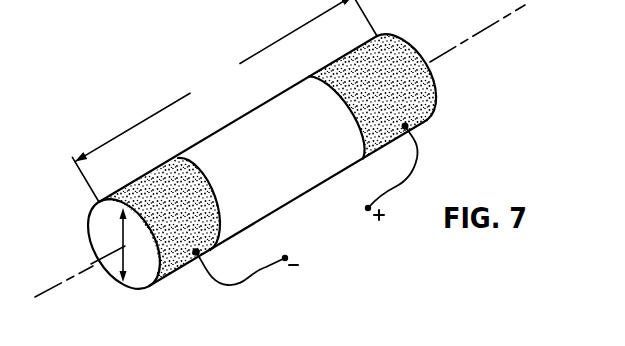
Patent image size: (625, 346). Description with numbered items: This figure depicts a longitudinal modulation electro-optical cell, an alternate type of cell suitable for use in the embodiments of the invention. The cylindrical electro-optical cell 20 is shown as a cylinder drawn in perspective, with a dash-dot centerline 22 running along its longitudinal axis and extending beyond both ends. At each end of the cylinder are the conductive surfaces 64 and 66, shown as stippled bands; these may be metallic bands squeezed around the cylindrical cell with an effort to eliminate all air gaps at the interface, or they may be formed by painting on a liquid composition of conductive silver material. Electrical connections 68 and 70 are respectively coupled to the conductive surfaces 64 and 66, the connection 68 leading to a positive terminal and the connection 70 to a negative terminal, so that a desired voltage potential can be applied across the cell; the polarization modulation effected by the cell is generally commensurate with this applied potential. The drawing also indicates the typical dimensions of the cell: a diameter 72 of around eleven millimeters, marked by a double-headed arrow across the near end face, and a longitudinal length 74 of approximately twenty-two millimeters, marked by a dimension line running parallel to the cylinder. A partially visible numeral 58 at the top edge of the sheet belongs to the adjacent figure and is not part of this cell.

The cylindrical electro-optical cell 20 is at (322, 228).
The longitudinal axis 22 is at (457, 46).
The transducer assembly 58 is at (101, 0).
The conductive surface 64 is at (381, 51).
The conductive surface 66 is at (181, 266).
The electrical connection 68 is at (410, 177).
The electrical connection 70 is at (243, 281).
The tube diameter 72 is at (128, 284).
The longitudinal length 74 is at (224, 101).